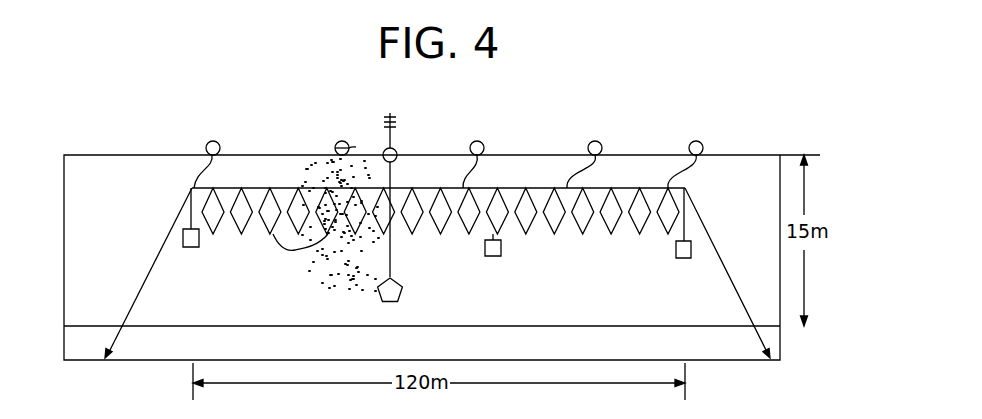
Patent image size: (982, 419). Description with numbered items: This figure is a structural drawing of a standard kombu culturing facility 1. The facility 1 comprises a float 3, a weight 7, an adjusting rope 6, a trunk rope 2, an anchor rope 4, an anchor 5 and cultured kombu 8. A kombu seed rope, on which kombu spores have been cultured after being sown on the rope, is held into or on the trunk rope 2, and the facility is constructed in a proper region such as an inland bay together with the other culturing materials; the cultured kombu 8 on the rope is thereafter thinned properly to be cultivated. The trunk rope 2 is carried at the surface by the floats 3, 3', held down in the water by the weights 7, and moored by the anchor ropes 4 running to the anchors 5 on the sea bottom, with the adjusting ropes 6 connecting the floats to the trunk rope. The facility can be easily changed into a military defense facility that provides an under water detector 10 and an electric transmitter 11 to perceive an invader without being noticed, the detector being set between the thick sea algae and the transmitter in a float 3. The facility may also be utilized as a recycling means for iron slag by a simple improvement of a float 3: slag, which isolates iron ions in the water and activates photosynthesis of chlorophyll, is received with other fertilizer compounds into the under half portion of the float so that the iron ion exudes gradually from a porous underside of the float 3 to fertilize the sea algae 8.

The kombu culturing facility 1 is at (502, 129).
The trunk rope 2 is at (283, 179).
The float 3 is at (476, 137).
The float 3' is at (313, 119).
The anchor rope 4 is at (178, 215).
The anchor 5 is at (126, 349).
The adjusting rope 6 is at (588, 170).
The weight 7 is at (683, 262).
The cultured kombu 8 is at (314, 226).
The under water detector 10 is at (423, 287).
The electric transmitter 11 is at (393, 137).